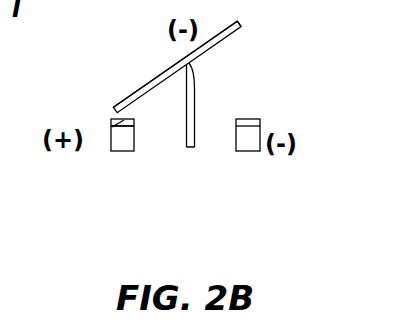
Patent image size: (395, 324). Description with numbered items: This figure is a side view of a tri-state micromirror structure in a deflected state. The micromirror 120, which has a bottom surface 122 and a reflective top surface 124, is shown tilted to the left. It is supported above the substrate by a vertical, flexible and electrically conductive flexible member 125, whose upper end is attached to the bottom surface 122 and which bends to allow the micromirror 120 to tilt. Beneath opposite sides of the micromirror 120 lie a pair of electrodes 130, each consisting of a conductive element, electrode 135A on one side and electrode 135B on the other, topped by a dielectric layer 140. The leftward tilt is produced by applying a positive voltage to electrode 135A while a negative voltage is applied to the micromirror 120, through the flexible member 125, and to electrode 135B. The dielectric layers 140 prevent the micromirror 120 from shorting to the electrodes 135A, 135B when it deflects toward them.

The micromirror 120 is at (138, 90).
The bottom surface 122 is at (232, 35).
The reflective top surface 124 is at (165, 70).
The flexible member 125 is at (195, 100).
The electrodes 130 is at (161, 184).
The electrode 135A is at (130, 141).
The electrode 135B is at (254, 141).
The dielectric layer 140 is at (110, 121).